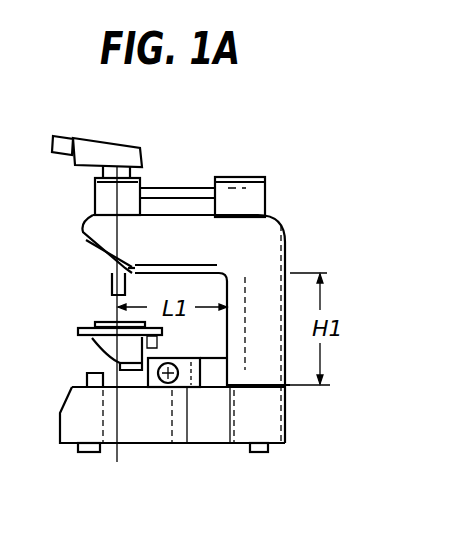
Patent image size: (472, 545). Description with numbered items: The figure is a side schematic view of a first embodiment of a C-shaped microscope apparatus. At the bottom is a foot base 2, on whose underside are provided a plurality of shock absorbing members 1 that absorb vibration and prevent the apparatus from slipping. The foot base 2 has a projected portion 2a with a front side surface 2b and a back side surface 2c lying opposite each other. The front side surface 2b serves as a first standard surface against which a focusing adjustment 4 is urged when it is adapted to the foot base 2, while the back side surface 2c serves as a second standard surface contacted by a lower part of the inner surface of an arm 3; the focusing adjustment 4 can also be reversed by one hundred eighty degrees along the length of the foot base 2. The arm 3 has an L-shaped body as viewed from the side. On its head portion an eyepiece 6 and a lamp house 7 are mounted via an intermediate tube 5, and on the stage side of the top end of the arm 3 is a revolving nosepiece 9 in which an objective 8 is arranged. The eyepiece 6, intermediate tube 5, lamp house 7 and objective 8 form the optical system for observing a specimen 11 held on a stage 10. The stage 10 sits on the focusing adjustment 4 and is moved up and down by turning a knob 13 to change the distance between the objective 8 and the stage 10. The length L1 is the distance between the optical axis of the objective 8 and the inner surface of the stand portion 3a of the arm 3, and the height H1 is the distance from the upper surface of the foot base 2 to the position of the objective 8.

The shock absorbing member 1 is at (85, 453).
The foot base 2 is at (218, 430).
The projected portion 2a is at (218, 380).
The front side surface 2b is at (188, 357).
The back side surface 2c is at (233, 370).
The arm 3 is at (262, 234).
The stand portion 3a is at (292, 273).
The focusing adjustment 4 is at (183, 390).
The intermediate tube 5 is at (131, 191).
The eyepiece 6 is at (72, 134).
The lamp house 7 is at (245, 185).
The objective 8 is at (110, 285).
The revolving nosepiece 9 is at (83, 247).
The stage 10 is at (80, 337).
The specimen 11 is at (100, 323).
The knob 13 is at (160, 390).